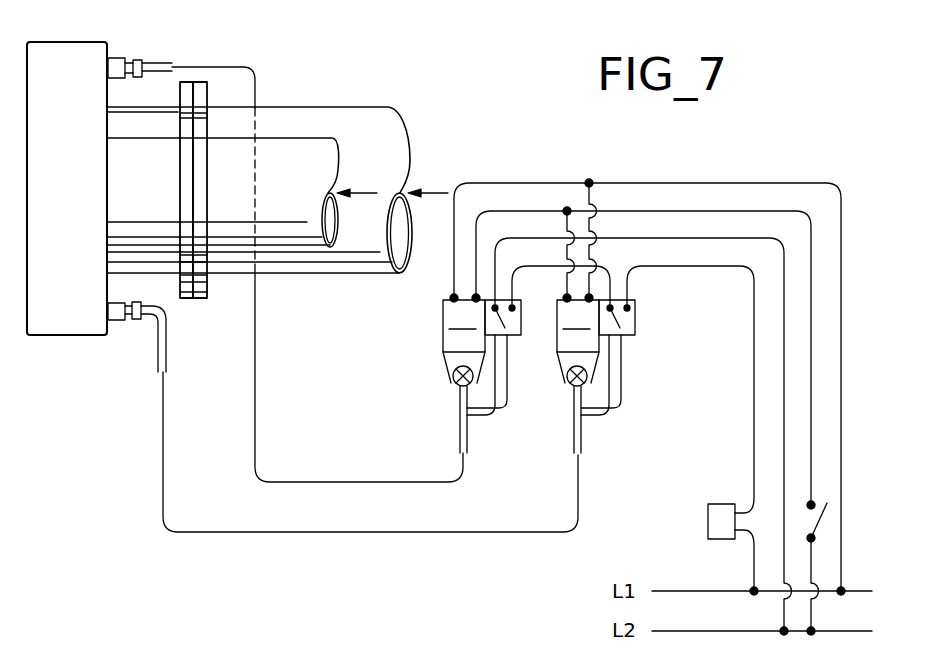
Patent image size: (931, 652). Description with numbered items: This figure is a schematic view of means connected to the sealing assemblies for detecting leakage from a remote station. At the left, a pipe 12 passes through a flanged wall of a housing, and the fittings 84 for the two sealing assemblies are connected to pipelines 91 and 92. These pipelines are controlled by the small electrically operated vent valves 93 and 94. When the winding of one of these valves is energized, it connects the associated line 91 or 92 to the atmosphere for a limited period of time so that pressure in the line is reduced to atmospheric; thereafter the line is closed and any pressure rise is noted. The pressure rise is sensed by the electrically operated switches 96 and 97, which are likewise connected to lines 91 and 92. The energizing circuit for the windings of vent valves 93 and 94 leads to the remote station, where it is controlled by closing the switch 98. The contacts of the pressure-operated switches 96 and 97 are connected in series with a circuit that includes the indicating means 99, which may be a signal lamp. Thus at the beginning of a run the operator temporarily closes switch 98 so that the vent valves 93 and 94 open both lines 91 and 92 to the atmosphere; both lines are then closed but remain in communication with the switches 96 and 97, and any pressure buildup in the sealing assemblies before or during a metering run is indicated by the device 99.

The pipe 12 is at (357, 274).
The fittings 84 is at (118, 58).
The pipeline 91 is at (163, 443).
The pipeline 92 is at (254, 410).
The vent valve 93 is at (612, 373).
The vent valve 94 is at (493, 373).
The pressure-operated switch 96 is at (635, 330).
The pressure-operated switch 97 is at (522, 330).
The switch 98 is at (822, 503).
The indicating means 99 is at (708, 510).